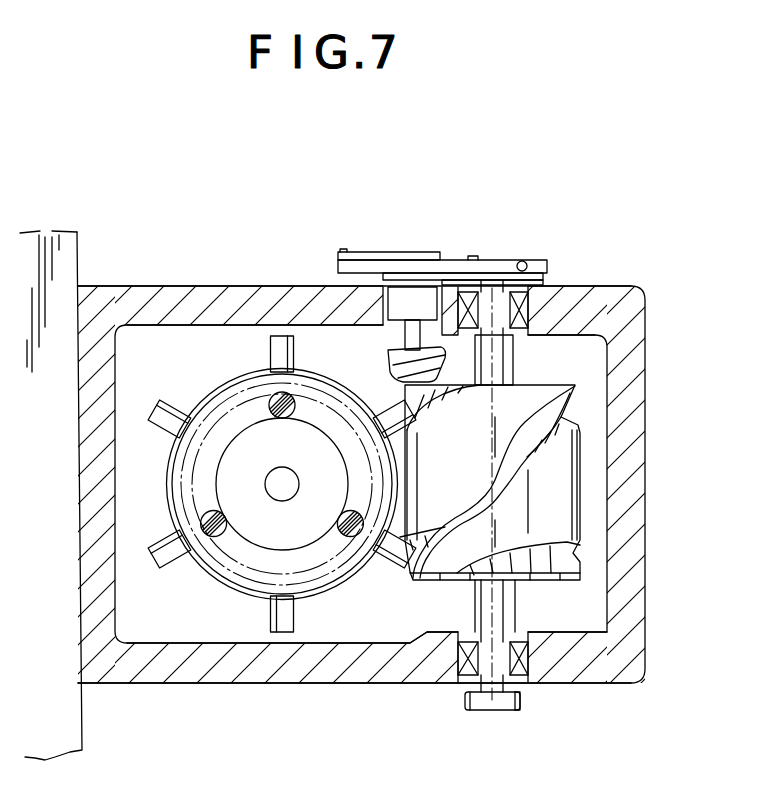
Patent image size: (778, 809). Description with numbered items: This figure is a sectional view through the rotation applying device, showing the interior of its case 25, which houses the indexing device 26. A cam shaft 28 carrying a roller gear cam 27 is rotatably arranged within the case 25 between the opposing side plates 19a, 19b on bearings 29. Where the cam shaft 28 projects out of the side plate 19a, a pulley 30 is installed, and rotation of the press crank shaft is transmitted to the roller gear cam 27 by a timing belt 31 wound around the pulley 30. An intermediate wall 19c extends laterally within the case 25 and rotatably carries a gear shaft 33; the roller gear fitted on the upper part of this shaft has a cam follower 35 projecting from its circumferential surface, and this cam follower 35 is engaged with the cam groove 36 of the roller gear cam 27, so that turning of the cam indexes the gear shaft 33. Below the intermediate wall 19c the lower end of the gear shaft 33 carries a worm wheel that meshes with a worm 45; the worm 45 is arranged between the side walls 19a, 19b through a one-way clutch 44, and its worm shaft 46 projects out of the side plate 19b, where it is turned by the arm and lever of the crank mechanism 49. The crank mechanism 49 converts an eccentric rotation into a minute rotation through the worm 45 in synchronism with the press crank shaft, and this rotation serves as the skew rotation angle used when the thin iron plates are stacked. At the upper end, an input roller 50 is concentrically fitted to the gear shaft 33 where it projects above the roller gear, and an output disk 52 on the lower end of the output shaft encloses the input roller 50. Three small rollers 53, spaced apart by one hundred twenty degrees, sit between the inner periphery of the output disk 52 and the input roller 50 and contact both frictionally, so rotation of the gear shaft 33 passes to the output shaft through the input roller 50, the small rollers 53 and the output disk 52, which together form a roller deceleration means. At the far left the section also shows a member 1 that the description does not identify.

The wall 1 is at (50, 248).
The side plate 19a is at (420, 672).
The side plate 19b is at (558, 303).
The intermediate wall 19c is at (152, 360).
The case 25 is at (632, 638).
The indexing device 26 is at (569, 479).
The roller gear cam 27 is at (552, 503).
The cam shaft 28 is at (513, 358).
The bearings 29 is at (530, 316).
The pulley 30 is at (495, 707).
The timing belt 31 is at (523, 702).
The gear shaft 33 is at (270, 476).
The cam follower 35 is at (392, 562).
The cam groove 36 is at (535, 443).
The one-way clutch 44 is at (398, 295).
The worm 45 is at (385, 357).
The worm shaft 46 is at (415, 280).
The crank mechanism 49 is at (432, 248).
The input roller 50 is at (268, 528).
The output disk 52 is at (250, 585).
The small rollers 53 is at (276, 393).